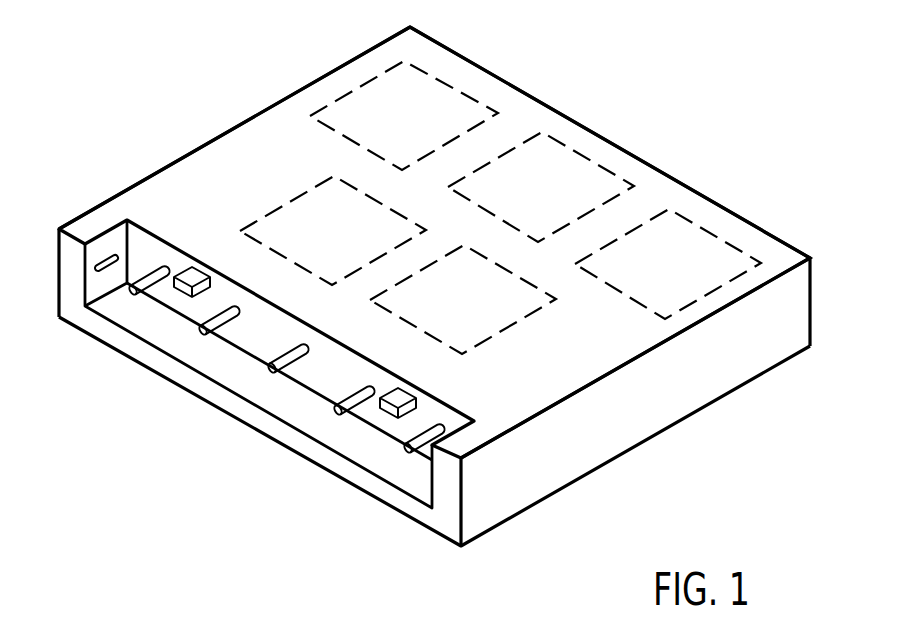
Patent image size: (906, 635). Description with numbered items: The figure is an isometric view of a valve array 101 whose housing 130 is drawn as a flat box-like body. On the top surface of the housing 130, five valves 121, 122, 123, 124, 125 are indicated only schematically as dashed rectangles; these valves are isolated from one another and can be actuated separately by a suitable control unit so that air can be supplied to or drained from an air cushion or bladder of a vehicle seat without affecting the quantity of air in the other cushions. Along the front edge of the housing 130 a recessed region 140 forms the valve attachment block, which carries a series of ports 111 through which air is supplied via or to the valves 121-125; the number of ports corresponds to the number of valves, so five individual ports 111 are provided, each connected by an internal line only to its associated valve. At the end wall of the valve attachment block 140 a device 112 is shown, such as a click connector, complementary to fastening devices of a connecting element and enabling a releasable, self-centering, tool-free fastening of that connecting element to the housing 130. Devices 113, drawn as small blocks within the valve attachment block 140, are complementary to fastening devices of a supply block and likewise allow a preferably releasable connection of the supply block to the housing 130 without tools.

The valve array 101 is at (328, 88).
The ports 111 is at (270, 373).
The devices 112 is at (108, 255).
The devices 113 is at (418, 387).
The valve 121 is at (486, 98).
The valve 122 is at (616, 173).
The valve 123 is at (746, 250).
The valve 124 is at (520, 325).
The valve 125 is at (293, 200).
The housing 130 is at (813, 292).
The valve attachment block 140 is at (373, 446).